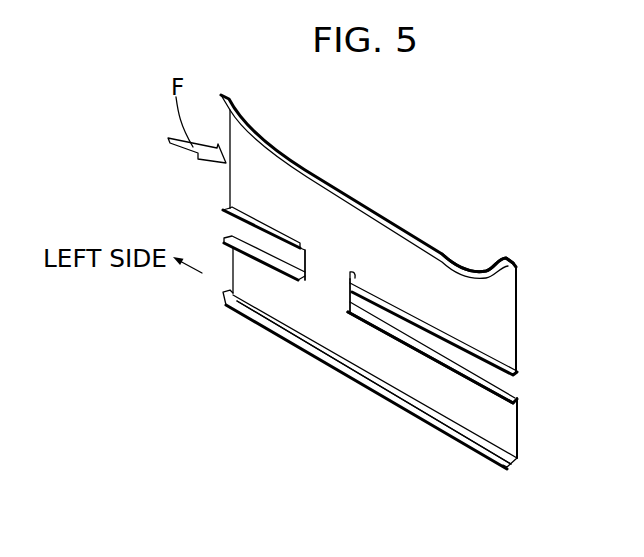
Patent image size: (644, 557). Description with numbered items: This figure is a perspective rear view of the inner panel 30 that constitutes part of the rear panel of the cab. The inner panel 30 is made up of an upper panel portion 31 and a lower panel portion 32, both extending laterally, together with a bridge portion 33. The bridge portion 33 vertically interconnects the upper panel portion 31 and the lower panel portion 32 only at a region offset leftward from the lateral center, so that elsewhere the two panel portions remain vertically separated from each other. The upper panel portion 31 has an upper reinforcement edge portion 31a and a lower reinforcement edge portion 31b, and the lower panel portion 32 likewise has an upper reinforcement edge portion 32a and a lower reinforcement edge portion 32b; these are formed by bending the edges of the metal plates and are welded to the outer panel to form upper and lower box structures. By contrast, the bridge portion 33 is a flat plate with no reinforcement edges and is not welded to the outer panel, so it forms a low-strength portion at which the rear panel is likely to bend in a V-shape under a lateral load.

The inner panel 30 is at (407, 223).
The upper panel portion 31 is at (497, 313).
The upper reinforcement edge portion 31a is at (445, 250).
The lower reinforcement edge portion 31b is at (518, 378).
The lower panel portion 32 is at (498, 428).
The upper reinforcement edge portion 32a is at (458, 378).
The lower reinforcement edge portion 32b is at (470, 440).
The bridge portion 33 is at (327, 277).